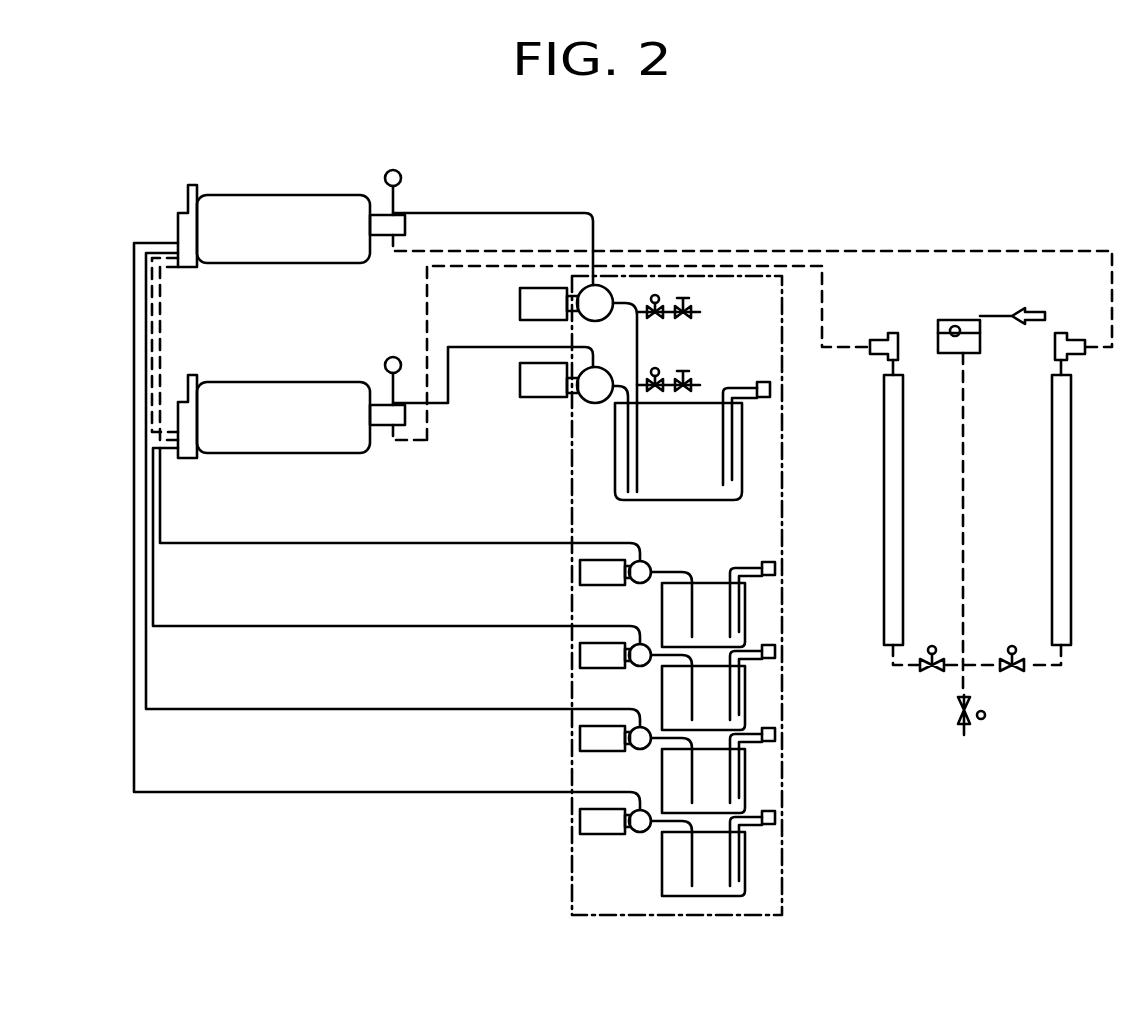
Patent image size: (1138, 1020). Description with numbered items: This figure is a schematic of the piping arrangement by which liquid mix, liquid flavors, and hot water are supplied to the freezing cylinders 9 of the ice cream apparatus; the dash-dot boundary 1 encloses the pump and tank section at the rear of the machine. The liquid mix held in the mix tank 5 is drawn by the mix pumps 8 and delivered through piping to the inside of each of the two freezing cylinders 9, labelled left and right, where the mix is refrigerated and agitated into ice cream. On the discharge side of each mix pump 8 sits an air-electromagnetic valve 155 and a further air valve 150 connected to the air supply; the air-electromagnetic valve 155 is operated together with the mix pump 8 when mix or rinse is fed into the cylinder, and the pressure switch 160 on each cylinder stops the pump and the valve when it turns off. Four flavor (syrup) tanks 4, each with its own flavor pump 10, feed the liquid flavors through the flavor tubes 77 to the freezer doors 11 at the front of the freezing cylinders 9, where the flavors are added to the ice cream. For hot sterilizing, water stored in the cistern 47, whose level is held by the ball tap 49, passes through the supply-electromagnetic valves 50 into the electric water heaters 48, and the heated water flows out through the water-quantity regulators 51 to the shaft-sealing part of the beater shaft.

The cleaning unit housing 1 is at (785, 441).
The flavor (syrup) tank 4 is at (712, 583).
The mix tank 5 is at (615, 462).
The mix pump 8 is at (520, 305).
The freezing cylinder 9 is at (312, 195).
The flavor pump 10 is at (600, 586).
The freezer door 11 is at (178, 213).
The cistern 47 is at (984, 350).
The electric water heater 48 is at (884, 592).
The ball tap 49 is at (950, 320).
The supply-electromagnetic valve 50 is at (934, 672).
The water-quantity regulator 51 is at (880, 338).
The flavor tube 77 is at (160, 518).
The air valve 150 is at (695, 295).
The air-electromagnetic valve 155 is at (663, 298).
The pressure switch 160 is at (393, 170).